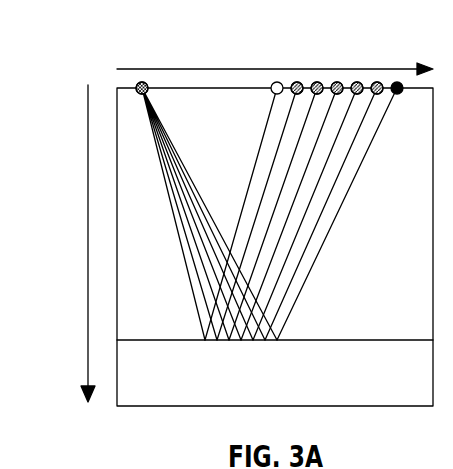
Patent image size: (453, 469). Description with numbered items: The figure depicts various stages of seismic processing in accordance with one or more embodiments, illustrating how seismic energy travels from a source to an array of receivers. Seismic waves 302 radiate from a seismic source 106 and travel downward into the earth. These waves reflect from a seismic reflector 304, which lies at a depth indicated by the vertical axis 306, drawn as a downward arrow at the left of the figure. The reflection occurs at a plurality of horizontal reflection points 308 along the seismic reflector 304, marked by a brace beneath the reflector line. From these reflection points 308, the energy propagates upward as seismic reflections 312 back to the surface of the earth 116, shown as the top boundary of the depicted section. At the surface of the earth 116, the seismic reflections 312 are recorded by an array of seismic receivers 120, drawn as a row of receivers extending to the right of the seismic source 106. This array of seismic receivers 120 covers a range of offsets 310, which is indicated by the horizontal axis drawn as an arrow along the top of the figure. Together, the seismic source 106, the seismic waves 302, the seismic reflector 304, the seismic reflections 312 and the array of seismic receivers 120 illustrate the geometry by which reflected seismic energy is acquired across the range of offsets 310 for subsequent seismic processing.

The seismic source 106 is at (139, 82).
The surface of the earth 116 is at (233, 88).
The array of seismic receivers 120 is at (405, 63).
The seismic waves 302 is at (212, 208).
The seismic reflector 304 is at (168, 338).
The vertical axis 306 is at (88, 245).
The horizontal reflection points 308 is at (272, 342).
The range of offsets 310 is at (187, 68).
The seismic reflections 312 is at (333, 222).